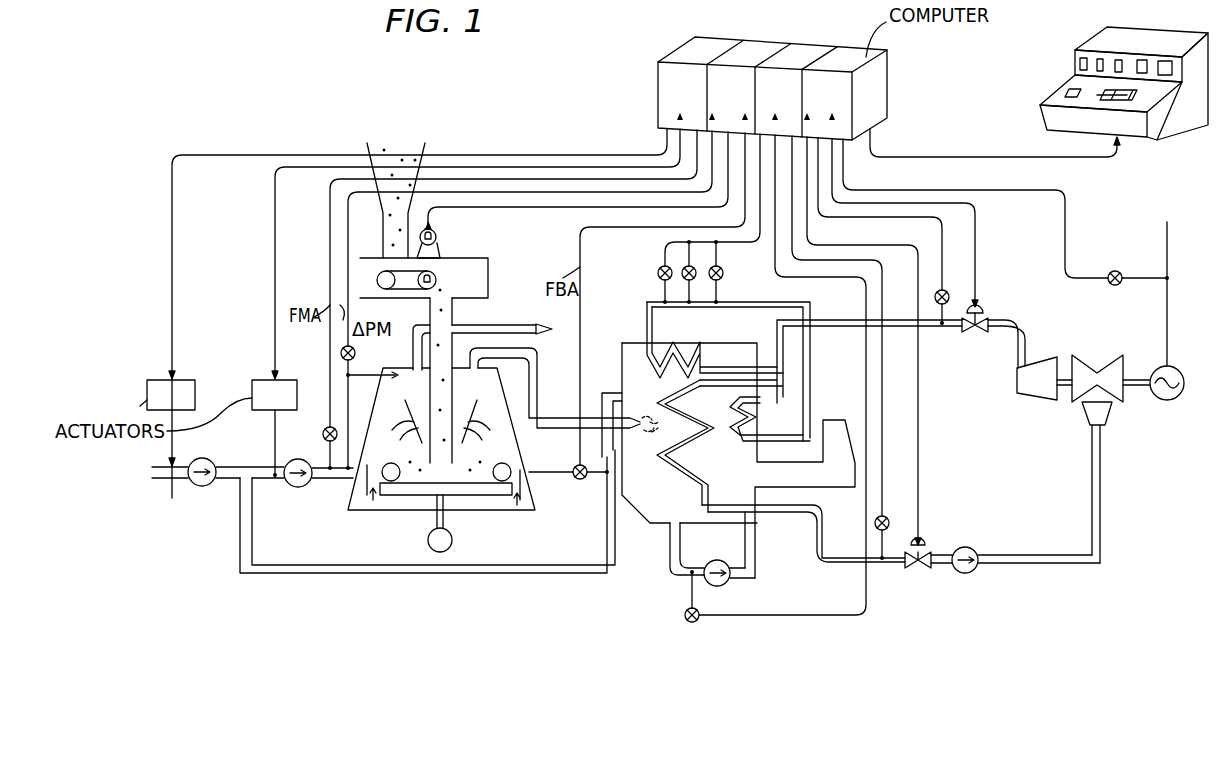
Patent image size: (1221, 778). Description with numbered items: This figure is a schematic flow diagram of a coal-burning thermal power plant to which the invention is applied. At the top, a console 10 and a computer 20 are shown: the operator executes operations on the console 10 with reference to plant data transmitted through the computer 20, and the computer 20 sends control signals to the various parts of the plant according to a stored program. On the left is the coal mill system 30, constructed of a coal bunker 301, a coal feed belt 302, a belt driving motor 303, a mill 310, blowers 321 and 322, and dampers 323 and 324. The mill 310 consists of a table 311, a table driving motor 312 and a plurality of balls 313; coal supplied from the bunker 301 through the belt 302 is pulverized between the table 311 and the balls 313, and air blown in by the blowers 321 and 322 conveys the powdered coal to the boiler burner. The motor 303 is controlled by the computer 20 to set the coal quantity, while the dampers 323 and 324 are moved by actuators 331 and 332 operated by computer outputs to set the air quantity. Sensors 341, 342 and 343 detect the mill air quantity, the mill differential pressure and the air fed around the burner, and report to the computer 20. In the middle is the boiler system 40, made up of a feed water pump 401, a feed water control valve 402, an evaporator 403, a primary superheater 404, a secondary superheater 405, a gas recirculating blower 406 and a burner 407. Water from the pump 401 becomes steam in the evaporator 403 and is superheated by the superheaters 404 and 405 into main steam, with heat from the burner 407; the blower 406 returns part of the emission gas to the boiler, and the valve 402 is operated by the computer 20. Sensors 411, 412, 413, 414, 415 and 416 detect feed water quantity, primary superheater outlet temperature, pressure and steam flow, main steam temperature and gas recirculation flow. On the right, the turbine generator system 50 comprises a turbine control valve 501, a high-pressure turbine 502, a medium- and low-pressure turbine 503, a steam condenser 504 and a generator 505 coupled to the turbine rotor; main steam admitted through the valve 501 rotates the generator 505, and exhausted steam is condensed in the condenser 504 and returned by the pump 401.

The console 10 is at (1167, 21).
The computer 20 is at (800, 27).
The coal mill system 30 is at (335, 551).
The boiler system 40 is at (799, 611).
The turbine generator system 50 is at (1112, 335).
The coal bunker 301 is at (418, 158).
The coal feed belt 302 is at (402, 298).
The belt driving motor 303 is at (436, 235).
The mill 310 is at (495, 510).
The table 311 is at (468, 497).
The table driving motor 312 is at (428, 542).
The balls 313 is at (511, 470).
The blower 321 is at (202, 486).
The blower 322 is at (298, 487).
The damper 323 is at (172, 498).
The damper 324 is at (258, 462).
The actuator 331 is at (175, 383).
The actuator 332 is at (262, 380).
The sensor 341 is at (323, 434).
The sensor 342 is at (355, 353).
The sensor 343 is at (580, 479).
The feed water pump 401 is at (973, 571).
The feed water control valve 402 is at (916, 570).
The evaporator 403 is at (680, 470).
The primary superheater 404 is at (746, 414).
The secondary superheater 405 is at (680, 353).
The gas recirculating blower 406 is at (714, 560).
The burner 407 is at (625, 398).
The sensor 411 is at (886, 516).
The sensor 412 is at (659, 277).
The sensor 413 is at (682, 270).
The sensor 414 is at (723, 273).
The sensor 415 is at (948, 290).
The sensor 416 is at (685, 613).
The turbine control valve 501 is at (984, 311).
The high-pressure turbine 502 is at (1025, 396).
The medium- and low-pressure turbine 503 is at (1118, 402).
The steam condenser 504 is at (1090, 420).
The generator 505 is at (1177, 374).